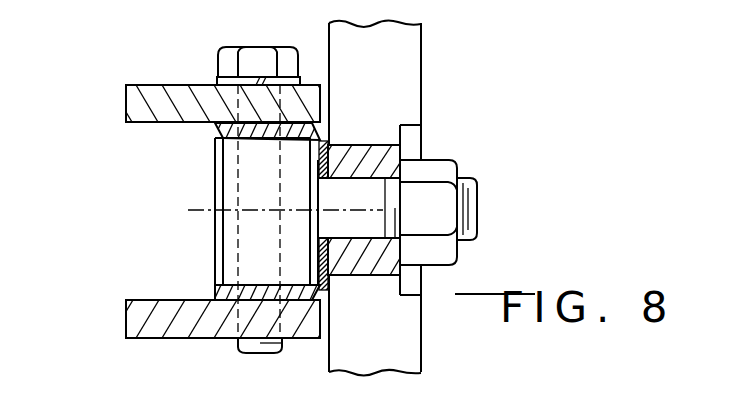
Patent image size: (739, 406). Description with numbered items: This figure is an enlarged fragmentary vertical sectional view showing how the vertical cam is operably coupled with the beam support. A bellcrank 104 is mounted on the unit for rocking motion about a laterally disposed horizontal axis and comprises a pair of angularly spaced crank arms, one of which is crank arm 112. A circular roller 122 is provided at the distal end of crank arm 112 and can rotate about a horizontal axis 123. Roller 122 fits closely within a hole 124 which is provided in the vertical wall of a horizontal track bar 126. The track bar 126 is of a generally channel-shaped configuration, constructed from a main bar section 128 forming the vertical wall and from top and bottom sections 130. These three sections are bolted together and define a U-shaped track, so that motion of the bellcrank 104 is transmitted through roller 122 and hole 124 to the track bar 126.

The bellcrank 104 is at (431, 62).
The crank arm 112 is at (368, 145).
The circular roller 122 is at (222, 229).
The horizontal axis 123 is at (202, 208).
The hole 124 is at (253, 286).
The horizontal track bar 126 is at (126, 86).
The main bar section 128 is at (213, 127).
The top and bottom sections 130 is at (190, 100).